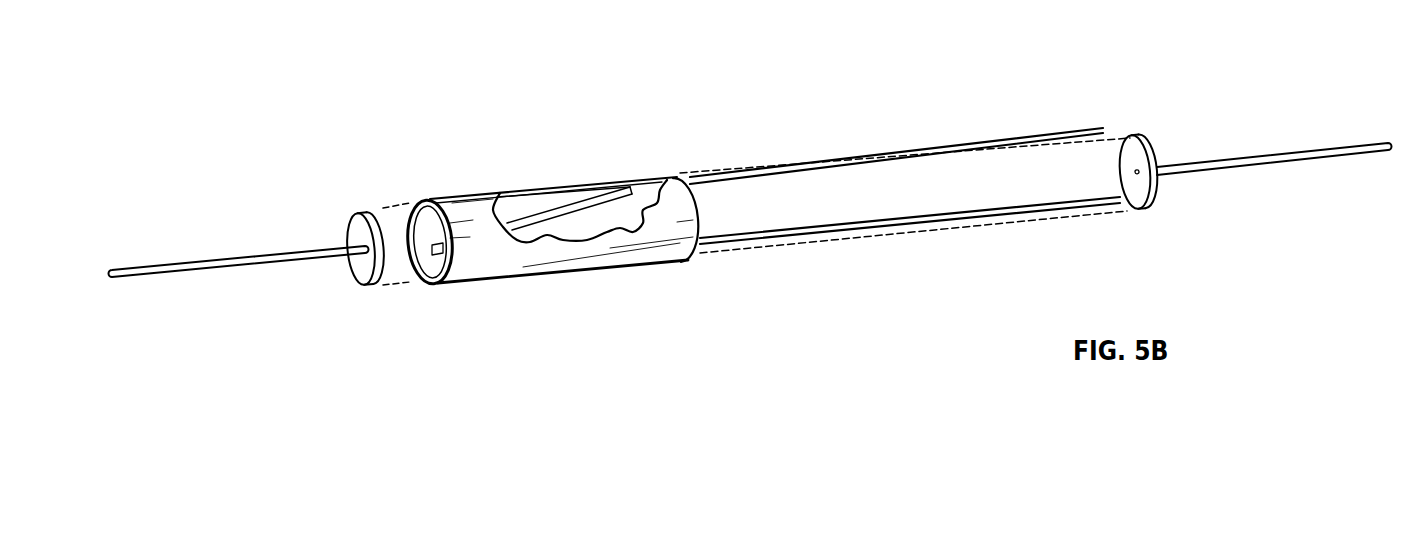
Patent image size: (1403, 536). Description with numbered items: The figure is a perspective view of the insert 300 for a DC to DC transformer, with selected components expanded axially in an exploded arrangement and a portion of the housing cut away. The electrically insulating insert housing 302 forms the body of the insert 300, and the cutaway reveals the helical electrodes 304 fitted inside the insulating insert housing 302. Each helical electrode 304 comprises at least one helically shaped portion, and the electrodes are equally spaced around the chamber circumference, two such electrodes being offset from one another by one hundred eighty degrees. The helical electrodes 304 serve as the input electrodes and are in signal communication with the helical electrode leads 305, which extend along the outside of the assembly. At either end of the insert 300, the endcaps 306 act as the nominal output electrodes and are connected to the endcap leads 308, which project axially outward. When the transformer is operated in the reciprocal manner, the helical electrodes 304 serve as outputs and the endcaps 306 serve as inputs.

The transformer insert 300 is at (740, 84).
The insulating insert housing 302 is at (609, 160).
The helical electrodes 304 is at (590, 202).
The helical electrode leads 305 is at (973, 140).
The endcaps 306 is at (362, 233).
The endcap leads 308 is at (243, 267).